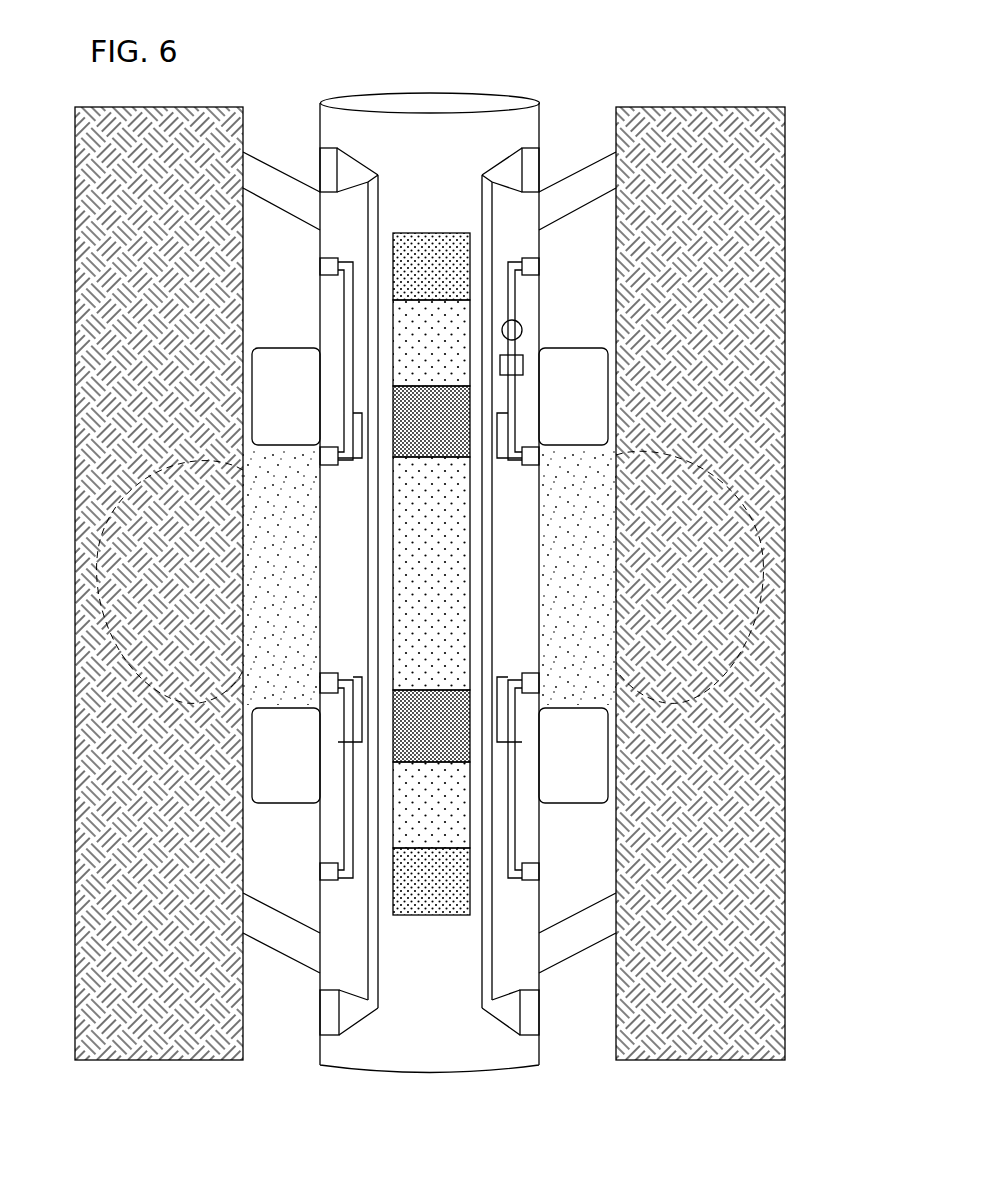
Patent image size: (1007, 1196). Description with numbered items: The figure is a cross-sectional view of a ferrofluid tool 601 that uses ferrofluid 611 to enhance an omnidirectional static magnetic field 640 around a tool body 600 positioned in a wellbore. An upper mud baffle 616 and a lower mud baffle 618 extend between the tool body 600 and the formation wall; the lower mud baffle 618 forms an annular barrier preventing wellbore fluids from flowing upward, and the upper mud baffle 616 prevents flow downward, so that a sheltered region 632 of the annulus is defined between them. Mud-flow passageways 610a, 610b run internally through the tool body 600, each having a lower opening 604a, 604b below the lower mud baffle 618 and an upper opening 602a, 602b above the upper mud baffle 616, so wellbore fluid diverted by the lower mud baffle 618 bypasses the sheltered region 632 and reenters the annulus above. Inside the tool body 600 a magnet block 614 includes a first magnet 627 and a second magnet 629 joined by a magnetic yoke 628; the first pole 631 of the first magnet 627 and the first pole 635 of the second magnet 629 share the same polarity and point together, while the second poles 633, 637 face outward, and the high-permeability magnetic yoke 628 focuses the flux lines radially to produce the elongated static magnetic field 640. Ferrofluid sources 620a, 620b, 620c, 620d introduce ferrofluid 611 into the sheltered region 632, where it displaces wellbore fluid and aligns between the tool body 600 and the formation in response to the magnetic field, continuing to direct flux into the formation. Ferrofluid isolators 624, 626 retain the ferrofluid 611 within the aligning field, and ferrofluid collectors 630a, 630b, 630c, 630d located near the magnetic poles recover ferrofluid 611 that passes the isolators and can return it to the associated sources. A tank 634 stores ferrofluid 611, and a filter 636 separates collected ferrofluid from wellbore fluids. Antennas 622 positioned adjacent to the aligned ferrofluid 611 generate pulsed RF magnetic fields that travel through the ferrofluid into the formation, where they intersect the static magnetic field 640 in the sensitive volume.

The tool body 600 is at (405, 97).
The ferrofluid tool 601 is at (565, 70).
The upper opening 602a is at (328, 160).
The upper opening 602b is at (532, 160).
The lower opening 604a is at (322, 1008).
The lower opening 604b is at (537, 1017).
The mud-flow passageway 610a is at (378, 938).
The mud-flow passageway 610b is at (480, 972).
The ferrofluid 611 is at (418, 577).
The magnet block 614 is at (414, 222).
The upper mud baffle 616 is at (293, 191).
The lower mud baffle 618 is at (293, 958).
The ferrofluid source 620a is at (329, 460).
The ferrofluid source 620b is at (329, 683).
The ferrofluid source 620c is at (531, 460).
The ferrofluid source 620d is at (531, 683).
The antenna 622 is at (329, 510).
The ferrofluid isolator 624 is at (430, 396).
The ferrofluid isolator 626 is at (430, 755).
The first magnet 627 is at (408, 829).
The magnetic yoke 628 is at (403, 584).
The second magnet 629 is at (413, 318).
The ferrofluid collector 630a is at (329, 265).
The ferrofluid collector 630b is at (330, 872).
The ferrofluid collector 630c is at (531, 265).
The ferrofluid collector 630d is at (530, 872).
The first pole 631 is at (452, 692).
The sheltered region 632 is at (585, 828).
The second pole 633 is at (438, 915).
The tank 634 is at (523, 362).
The first pole 635 is at (447, 460).
The filter 636 is at (518, 328).
The second pole 637 is at (437, 233).
The static magnetic field 640 is at (243, 600).